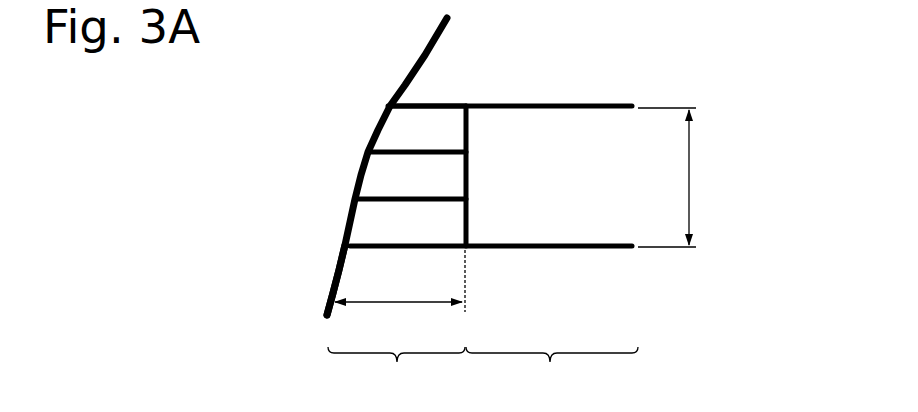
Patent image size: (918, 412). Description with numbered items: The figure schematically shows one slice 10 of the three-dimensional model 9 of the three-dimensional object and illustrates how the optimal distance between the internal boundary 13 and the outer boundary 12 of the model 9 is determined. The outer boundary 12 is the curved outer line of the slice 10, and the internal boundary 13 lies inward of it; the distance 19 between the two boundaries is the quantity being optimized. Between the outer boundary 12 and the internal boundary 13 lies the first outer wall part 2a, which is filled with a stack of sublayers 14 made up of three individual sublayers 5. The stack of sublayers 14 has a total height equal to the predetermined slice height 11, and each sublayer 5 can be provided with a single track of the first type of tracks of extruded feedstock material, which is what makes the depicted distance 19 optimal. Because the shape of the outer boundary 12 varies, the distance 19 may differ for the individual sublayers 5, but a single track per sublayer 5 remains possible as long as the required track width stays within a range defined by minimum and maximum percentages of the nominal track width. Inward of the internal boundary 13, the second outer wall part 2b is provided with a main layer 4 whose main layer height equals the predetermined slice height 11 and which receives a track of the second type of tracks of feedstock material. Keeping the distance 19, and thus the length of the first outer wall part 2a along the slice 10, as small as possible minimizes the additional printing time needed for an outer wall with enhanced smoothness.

The 3D model 9 is at (396, 64).
The outer boundary 12 is at (323, 275).
The main layer 4 is at (561, 101).
The stack of sublayers 14 is at (450, 97).
The internal boundary 13 is at (467, 255).
The sublayer 5 is at (378, 222).
The predetermined slice height 11 is at (684, 177).
The distance 19 is at (398, 288).
The slice 10 is at (730, 210).
The first outer wall part 2a is at (396, 371).
The second outer wall part 2b is at (552, 371).